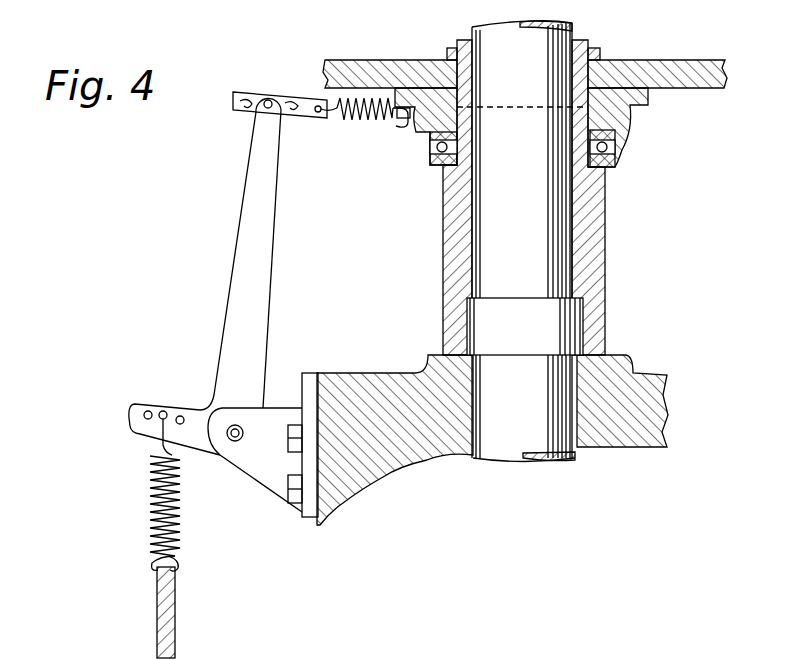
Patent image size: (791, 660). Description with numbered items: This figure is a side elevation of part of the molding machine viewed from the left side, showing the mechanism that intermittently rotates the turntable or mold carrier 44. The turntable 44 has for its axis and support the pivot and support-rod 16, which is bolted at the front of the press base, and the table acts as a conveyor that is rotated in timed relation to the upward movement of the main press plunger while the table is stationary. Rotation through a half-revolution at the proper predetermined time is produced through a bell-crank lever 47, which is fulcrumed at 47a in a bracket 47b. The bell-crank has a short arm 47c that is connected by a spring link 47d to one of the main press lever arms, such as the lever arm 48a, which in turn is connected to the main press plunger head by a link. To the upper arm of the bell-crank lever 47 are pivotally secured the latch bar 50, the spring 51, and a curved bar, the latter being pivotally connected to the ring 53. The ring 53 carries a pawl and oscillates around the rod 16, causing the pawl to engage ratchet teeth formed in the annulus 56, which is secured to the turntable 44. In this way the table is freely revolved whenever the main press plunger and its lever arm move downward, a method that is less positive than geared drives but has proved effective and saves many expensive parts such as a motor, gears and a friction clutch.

The pivot and support-rod 16 is at (525, 241).
The turntable or mold carrier 44 is at (625, 86).
The bell-crank lever 47 is at (258, 286).
The fulcrum 47a is at (236, 424).
The bracket 47b is at (264, 422).
The short arm 47c is at (165, 413).
The spring link 47d is at (150, 522).
The main press lever arm 48a is at (158, 630).
The latch bar 50 is at (302, 100).
The spring 51 is at (365, 118).
The ring 53 is at (645, 108).
The annulus 56 is at (632, 140).